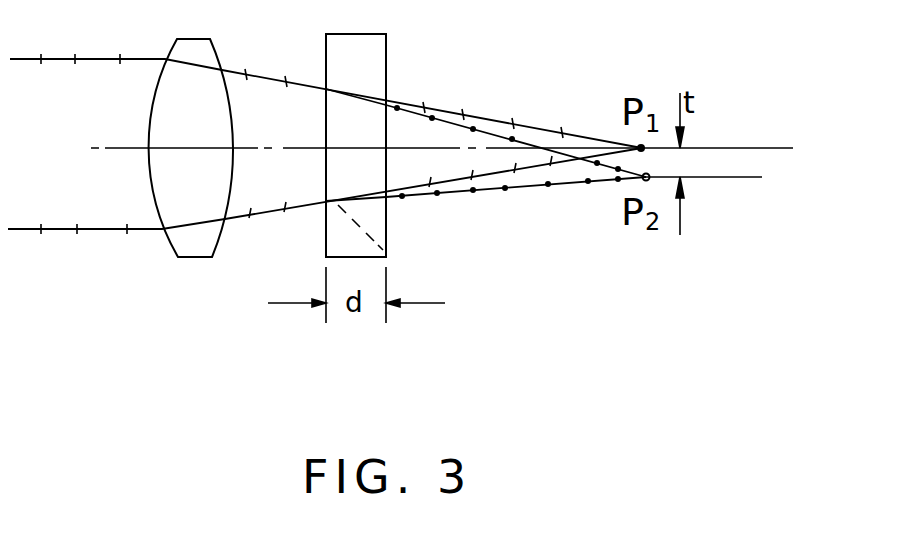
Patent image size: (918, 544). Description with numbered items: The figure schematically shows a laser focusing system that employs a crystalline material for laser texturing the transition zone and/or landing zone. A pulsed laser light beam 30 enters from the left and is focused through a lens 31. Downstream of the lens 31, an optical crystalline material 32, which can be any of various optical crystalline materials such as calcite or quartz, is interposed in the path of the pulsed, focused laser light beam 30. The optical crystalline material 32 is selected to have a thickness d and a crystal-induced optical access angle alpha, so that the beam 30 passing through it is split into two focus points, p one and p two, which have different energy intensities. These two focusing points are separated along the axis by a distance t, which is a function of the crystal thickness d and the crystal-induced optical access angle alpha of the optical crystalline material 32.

The pulsed laser light beam 30 is at (92, 236).
The lens 31 is at (200, 257).
The optical crystalline material 32 is at (386, 58).